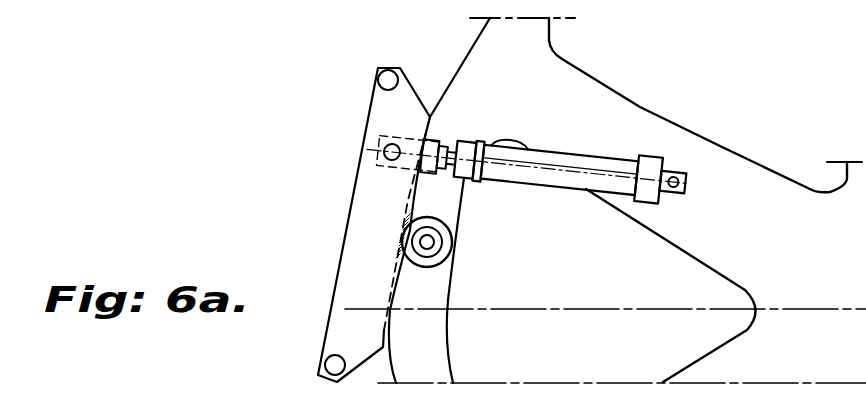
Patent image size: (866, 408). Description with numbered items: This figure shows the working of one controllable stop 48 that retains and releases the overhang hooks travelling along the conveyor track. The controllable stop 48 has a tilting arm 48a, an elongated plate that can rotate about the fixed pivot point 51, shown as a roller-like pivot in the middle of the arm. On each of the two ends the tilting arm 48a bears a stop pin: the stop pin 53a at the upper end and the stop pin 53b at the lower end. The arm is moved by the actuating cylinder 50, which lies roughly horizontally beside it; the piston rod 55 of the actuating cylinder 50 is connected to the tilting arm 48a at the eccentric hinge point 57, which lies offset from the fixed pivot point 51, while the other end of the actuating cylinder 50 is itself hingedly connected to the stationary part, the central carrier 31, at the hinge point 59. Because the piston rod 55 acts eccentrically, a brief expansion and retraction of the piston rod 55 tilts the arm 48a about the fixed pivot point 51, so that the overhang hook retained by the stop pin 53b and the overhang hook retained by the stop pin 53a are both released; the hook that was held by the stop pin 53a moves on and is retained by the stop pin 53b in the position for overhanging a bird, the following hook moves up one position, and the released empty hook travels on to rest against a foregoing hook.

The central carrier 31 is at (677, 133).
The controllable stop 48 is at (346, 225).
The tilting arm 48a is at (357, 246).
The actuating cylinder 50 is at (558, 168).
The fixed pivot point 51 is at (452, 241).
The stop pin 53a is at (384, 74).
The stop pin 53b is at (328, 360).
The piston rod 55 is at (438, 157).
The eccentric hinge point 57 is at (407, 154).
The hinge point 59 is at (672, 182).